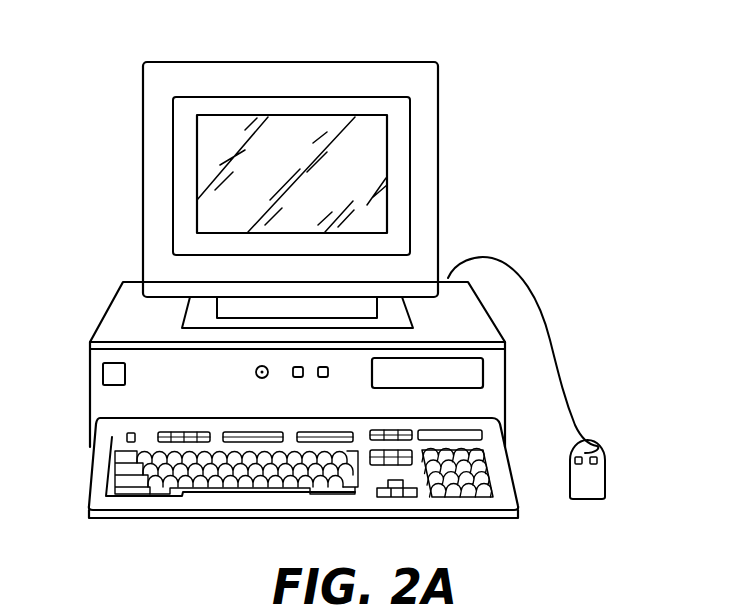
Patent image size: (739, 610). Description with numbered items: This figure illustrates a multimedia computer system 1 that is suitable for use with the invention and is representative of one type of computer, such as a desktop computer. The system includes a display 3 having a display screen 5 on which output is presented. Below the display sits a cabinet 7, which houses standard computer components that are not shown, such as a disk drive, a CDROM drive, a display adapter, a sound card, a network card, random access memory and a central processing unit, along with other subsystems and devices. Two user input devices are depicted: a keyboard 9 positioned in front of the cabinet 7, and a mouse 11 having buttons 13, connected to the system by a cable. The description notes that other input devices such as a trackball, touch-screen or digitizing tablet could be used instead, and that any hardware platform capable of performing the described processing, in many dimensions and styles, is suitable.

The multimedia computer system 1 is at (538, 114).
The display 3 is at (438, 155).
The display screen 5 is at (375, 138).
The cabinet 7 is at (467, 322).
The keyboard 9 is at (248, 518).
The mouse 11 is at (597, 479).
The buttons 13 is at (594, 456).